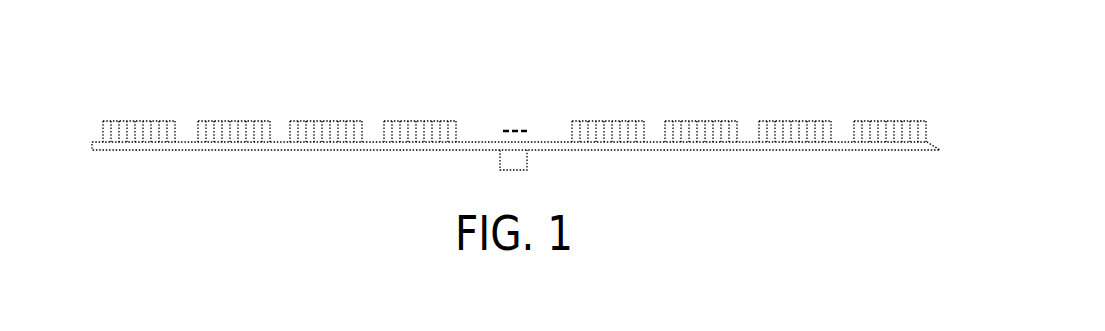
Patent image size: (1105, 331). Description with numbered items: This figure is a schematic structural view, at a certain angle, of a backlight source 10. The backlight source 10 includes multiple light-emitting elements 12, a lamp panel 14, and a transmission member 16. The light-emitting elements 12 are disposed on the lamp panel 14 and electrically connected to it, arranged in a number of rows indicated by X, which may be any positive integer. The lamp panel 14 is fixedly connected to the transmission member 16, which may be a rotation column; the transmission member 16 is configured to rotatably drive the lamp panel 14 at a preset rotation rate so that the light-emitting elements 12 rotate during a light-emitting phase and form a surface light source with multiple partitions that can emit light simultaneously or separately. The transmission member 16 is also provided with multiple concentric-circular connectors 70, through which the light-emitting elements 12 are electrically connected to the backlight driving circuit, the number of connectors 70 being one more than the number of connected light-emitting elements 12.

The backlight source 10 is at (81, 112).
The light-emitting elements 12 is at (927, 131).
The lamp panel 14 is at (940, 150).
The transmission member 16 is at (613, 175).
The concentric-circular connectors 70 is at (513, 161).